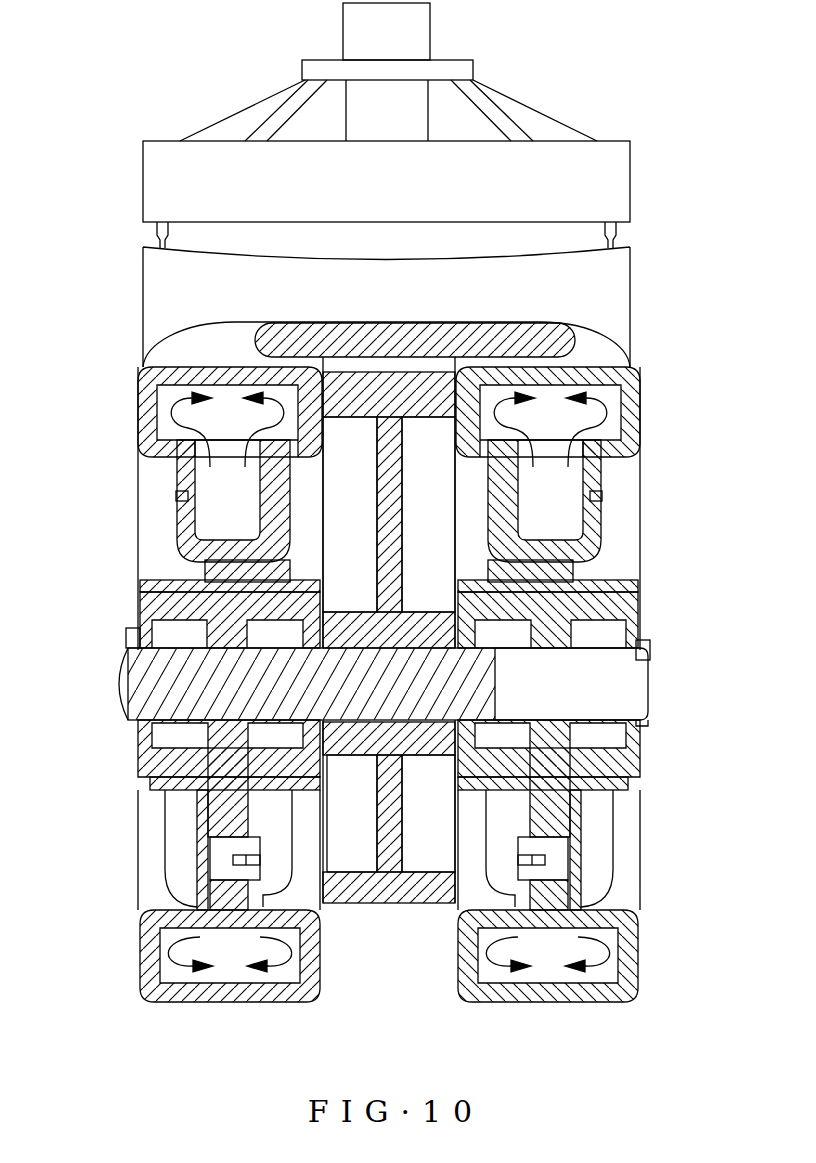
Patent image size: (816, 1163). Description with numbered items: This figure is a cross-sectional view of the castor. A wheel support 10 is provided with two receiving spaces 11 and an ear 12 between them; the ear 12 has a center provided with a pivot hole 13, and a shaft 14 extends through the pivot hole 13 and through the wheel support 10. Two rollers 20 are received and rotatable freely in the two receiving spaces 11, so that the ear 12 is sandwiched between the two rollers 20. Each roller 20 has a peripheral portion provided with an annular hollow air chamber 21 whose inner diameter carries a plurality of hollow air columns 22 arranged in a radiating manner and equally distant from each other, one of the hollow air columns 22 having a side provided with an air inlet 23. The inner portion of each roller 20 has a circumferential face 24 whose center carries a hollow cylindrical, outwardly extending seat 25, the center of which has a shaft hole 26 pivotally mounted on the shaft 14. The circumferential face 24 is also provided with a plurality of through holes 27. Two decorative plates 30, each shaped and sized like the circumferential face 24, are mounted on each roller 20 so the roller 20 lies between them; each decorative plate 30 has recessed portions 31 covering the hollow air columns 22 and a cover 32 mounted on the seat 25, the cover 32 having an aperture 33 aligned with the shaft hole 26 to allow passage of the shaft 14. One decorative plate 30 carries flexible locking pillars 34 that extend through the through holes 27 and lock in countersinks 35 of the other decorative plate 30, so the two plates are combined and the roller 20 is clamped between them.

The wheel support 10 is at (613, 173).
The receiving space 11 is at (205, 352).
The ear 12 is at (386, 884).
The pivot hole 13 is at (400, 647).
The shaft 14 is at (124, 688).
The roller 20 is at (136, 1002).
The hollow air chamber 21 is at (228, 968).
The hollow air column 22 is at (208, 468).
The air inlet 23 is at (188, 497).
The circumferential face 24 is at (220, 895).
The seat 25 is at (162, 766).
The shaft hole 26 is at (224, 636).
The through hole 27 is at (228, 836).
The decorative plate 30 is at (205, 818).
The recessed portion 31 is at (287, 473).
The cover 32 is at (172, 587).
The aperture 33 is at (136, 640).
The flexible locking pillar 34 is at (257, 833).
The countersink 35 is at (257, 890).